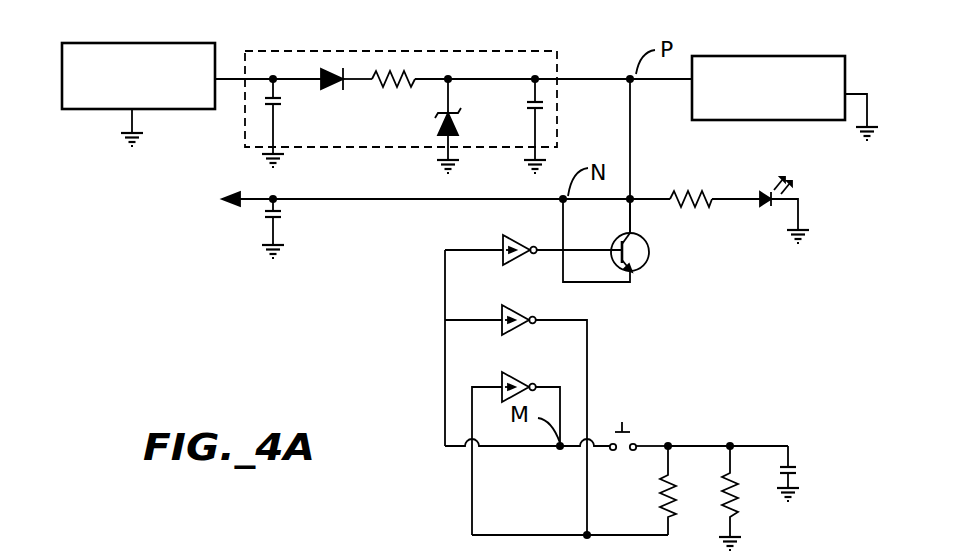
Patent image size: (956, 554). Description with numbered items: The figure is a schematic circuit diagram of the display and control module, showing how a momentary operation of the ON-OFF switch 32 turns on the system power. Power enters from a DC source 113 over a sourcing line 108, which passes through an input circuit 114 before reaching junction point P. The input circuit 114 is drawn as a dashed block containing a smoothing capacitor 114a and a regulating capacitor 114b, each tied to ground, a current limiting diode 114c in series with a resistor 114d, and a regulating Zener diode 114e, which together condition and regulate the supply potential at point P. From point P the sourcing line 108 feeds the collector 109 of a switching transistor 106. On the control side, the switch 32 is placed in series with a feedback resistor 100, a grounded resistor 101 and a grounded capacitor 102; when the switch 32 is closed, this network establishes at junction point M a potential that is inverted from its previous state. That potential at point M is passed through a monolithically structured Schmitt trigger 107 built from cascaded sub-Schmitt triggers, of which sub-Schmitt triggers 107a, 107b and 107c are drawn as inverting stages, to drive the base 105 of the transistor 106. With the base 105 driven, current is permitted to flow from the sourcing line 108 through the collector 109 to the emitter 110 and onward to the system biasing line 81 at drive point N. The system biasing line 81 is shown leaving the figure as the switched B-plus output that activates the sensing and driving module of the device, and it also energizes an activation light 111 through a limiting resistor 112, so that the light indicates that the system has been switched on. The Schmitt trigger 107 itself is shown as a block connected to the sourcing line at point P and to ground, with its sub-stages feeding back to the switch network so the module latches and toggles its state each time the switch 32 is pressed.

The DC source 113 is at (98, 43).
The input circuit 114 is at (282, 50).
The smoothing capacitor 114a is at (276, 104).
The regulating capacitor 114b is at (531, 108).
The current limiting diode 114c is at (330, 68).
The resistor 114d is at (402, 70).
The regulating Zener diode 114e is at (435, 120).
The sourcing line 108 is at (572, 79).
The Schmitt trigger 107 is at (735, 55).
The system biasing line 81 is at (318, 199).
The sub-Schmitt trigger 107a is at (522, 372).
The sub-Schmitt trigger 107b is at (522, 305).
The sub-Schmitt trigger 107c is at (518, 235).
The switching transistor 106 is at (647, 263).
The collector 109 is at (627, 237).
The base 105 is at (587, 253).
The emitter 110 is at (638, 258).
The limiting resistor 112 is at (678, 193).
The activation light 111 is at (760, 205).
The ON-OFF switch 32 is at (630, 426).
The feedback resistor 100 is at (653, 478).
The grounded resistor 101 is at (733, 480).
The grounded capacitor 102 is at (792, 463).